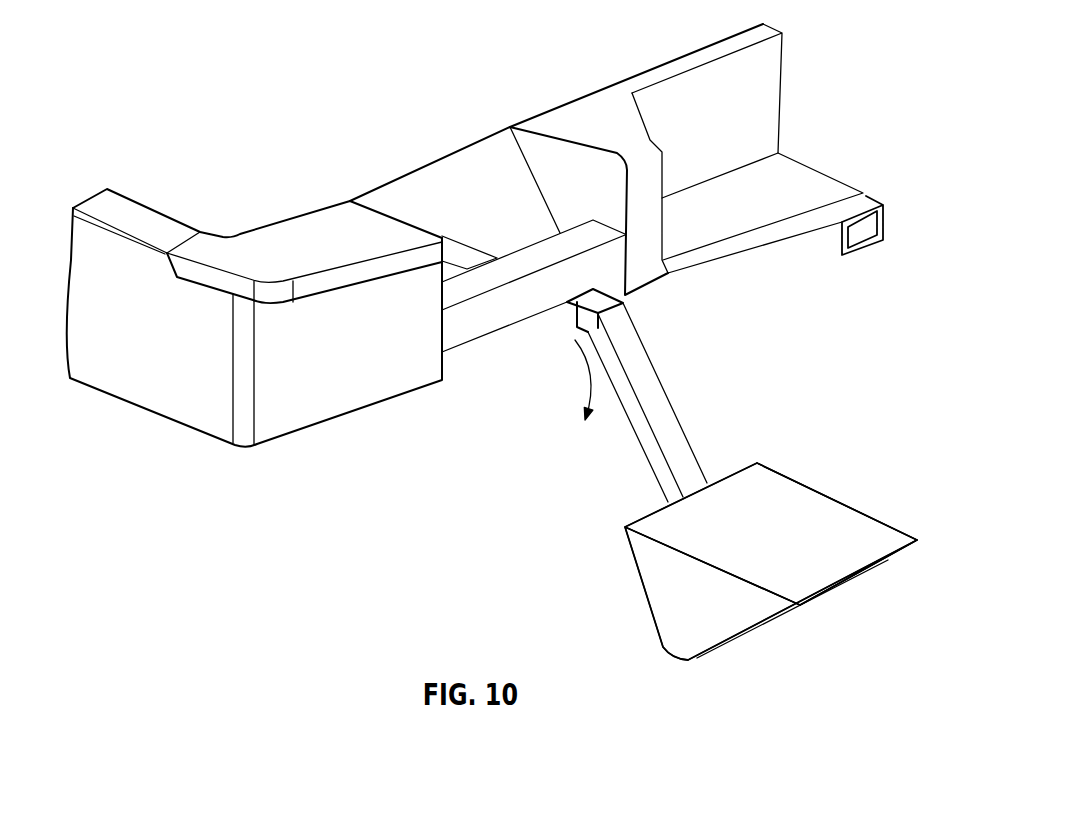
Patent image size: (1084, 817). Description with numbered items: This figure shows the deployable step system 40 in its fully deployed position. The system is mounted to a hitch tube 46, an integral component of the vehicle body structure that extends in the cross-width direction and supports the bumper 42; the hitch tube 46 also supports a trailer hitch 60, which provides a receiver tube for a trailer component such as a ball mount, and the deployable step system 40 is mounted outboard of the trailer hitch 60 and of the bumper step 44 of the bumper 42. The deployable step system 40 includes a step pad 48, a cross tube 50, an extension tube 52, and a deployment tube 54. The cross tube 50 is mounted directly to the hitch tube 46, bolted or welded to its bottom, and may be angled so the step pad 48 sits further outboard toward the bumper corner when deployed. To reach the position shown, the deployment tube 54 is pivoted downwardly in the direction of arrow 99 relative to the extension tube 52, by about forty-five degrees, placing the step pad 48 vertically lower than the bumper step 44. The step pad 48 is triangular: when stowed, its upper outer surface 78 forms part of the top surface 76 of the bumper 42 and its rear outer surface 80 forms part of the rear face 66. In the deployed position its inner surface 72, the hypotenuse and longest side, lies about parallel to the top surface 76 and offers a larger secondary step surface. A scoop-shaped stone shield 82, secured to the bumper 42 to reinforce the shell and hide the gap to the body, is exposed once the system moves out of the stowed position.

The deployable step system 40 is at (603, 632).
The bumper 42 is at (553, 84).
The bumper step 44 is at (798, 174).
The hitch tube 46 is at (452, 338).
The step pad 48 is at (790, 502).
The cross tube 50 is at (528, 347).
The extension tube 52 is at (535, 378).
The deployment tube 54 is at (645, 378).
The trailer hitch 60 is at (863, 208).
The rear face 66 is at (320, 407).
The inner surface 72 is at (858, 527).
The top surface 76 is at (273, 202).
The upper outer surface 78 is at (810, 607).
The rear outer surface 80 is at (598, 574).
The stone shield 82 is at (395, 162).
The arrow 99 is at (523, 417).